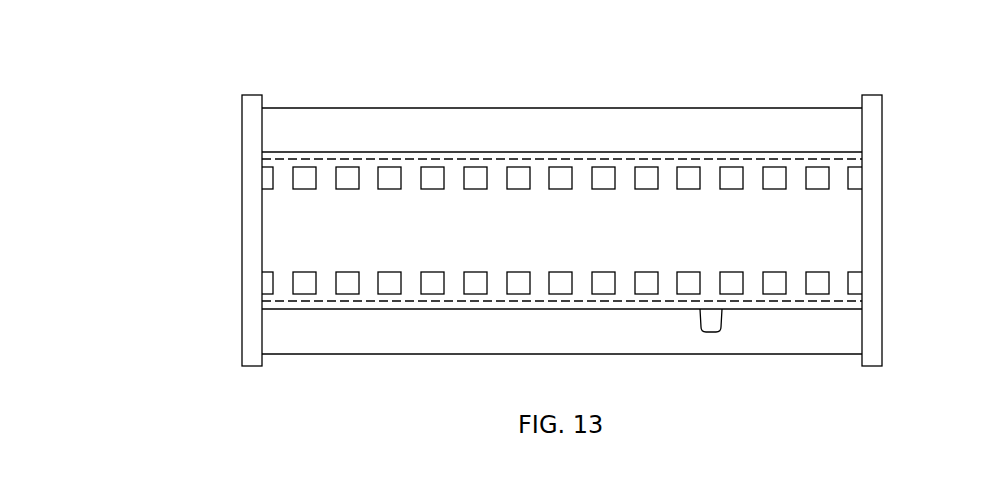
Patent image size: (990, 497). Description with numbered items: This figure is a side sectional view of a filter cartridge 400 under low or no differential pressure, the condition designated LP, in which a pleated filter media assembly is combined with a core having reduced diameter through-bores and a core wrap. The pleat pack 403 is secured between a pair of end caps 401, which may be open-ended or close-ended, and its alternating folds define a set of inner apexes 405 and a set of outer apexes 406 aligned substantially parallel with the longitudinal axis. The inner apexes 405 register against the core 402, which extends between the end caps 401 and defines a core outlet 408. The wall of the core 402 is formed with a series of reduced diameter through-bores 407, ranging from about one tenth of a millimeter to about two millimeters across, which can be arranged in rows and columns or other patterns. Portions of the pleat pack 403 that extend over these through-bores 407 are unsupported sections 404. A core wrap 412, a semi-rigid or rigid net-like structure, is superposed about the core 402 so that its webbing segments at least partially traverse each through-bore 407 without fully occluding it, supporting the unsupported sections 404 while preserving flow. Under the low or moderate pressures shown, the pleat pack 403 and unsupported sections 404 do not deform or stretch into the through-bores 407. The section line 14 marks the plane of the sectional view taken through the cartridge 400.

The filter cartridge 400 is at (264, 95).
The end caps 401 is at (242, 172).
The core 402 is at (345, 177).
The pleat pack 403 is at (831, 127).
The unsupported sections 404 is at (711, 332).
The inner apexes 405 is at (342, 152).
The outer apexes 406 is at (772, 108).
The through-bores 407 is at (498, 180).
The core outlet 408 is at (700, 238).
The core wrap 412 is at (772, 303).
The low differential pressure LP is at (490, 97).
The section line 14- 14 is at (602, 127).